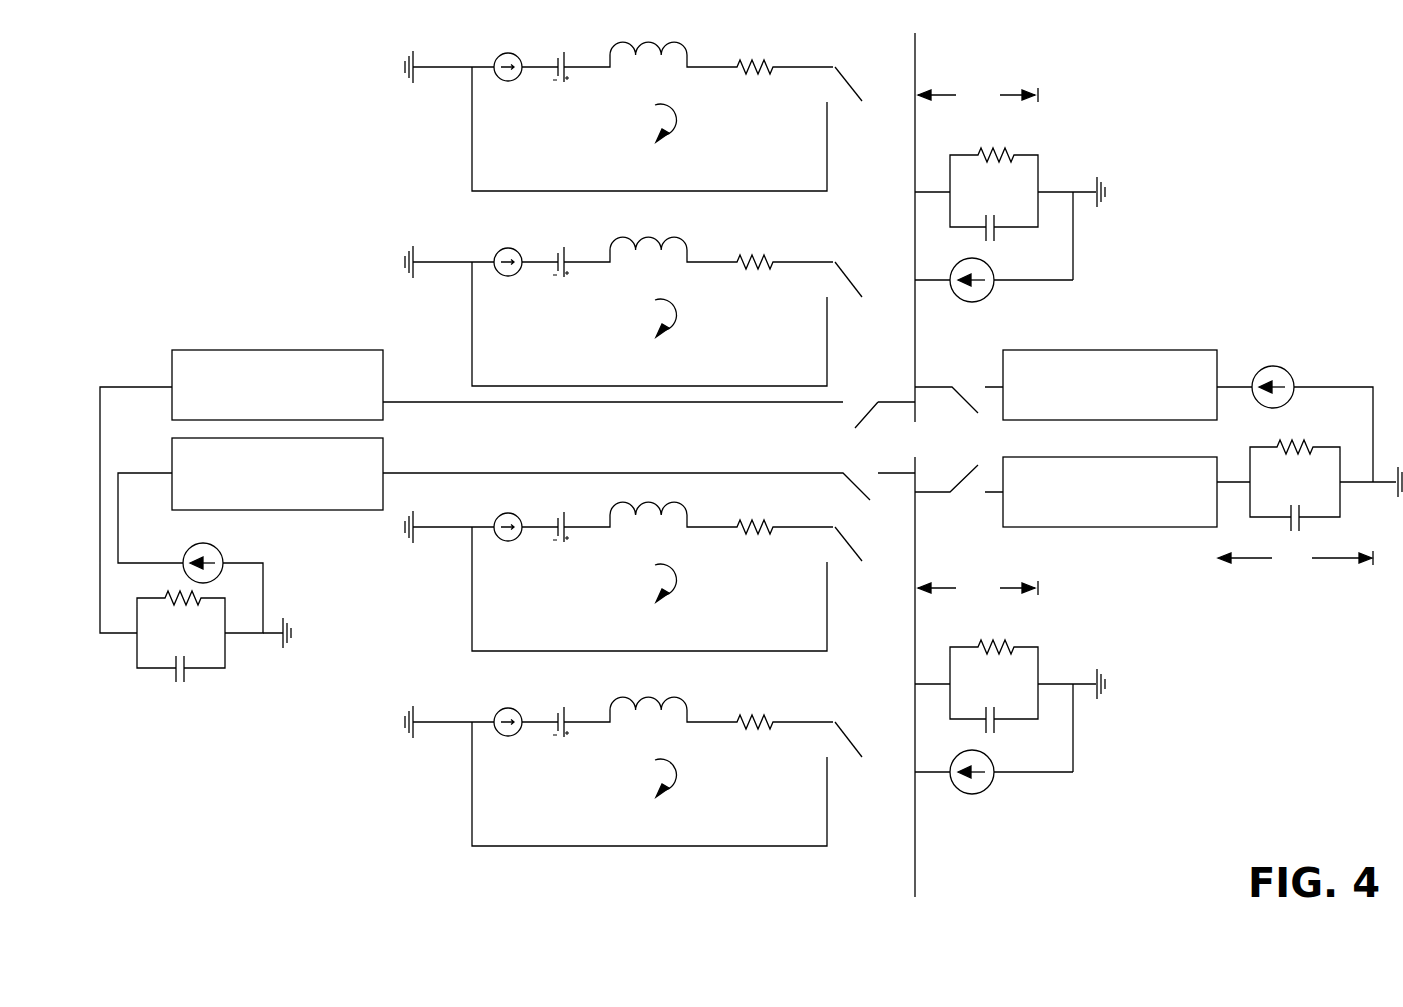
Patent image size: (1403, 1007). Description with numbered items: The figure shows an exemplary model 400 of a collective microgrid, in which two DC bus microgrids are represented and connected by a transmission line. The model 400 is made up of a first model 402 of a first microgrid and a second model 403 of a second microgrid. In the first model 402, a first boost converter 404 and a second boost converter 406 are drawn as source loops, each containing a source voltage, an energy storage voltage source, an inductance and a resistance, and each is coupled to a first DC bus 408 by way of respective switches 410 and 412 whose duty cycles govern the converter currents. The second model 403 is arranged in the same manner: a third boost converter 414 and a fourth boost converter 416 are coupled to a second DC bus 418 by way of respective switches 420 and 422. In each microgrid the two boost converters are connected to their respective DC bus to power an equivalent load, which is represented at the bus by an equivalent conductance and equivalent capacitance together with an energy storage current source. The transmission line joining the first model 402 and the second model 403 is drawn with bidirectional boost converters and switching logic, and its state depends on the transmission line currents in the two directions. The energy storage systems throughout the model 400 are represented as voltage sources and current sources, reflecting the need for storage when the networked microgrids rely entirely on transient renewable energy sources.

The model 400 is at (1233, 100).
The first model 402 is at (313, 155).
The second model 403 is at (345, 742).
The first boost converter 404 is at (636, 112).
The second boost converter 406 is at (643, 307).
The first DC bus 408 is at (914, 154).
The switch 410 is at (836, 66).
The switch 412 is at (834, 261).
The third boost converter 414 is at (631, 572).
The fourth boost converter 416 is at (643, 767).
The second DC bus 418 is at (914, 632).
The switch 420 is at (837, 526).
The switch 422 is at (835, 721).